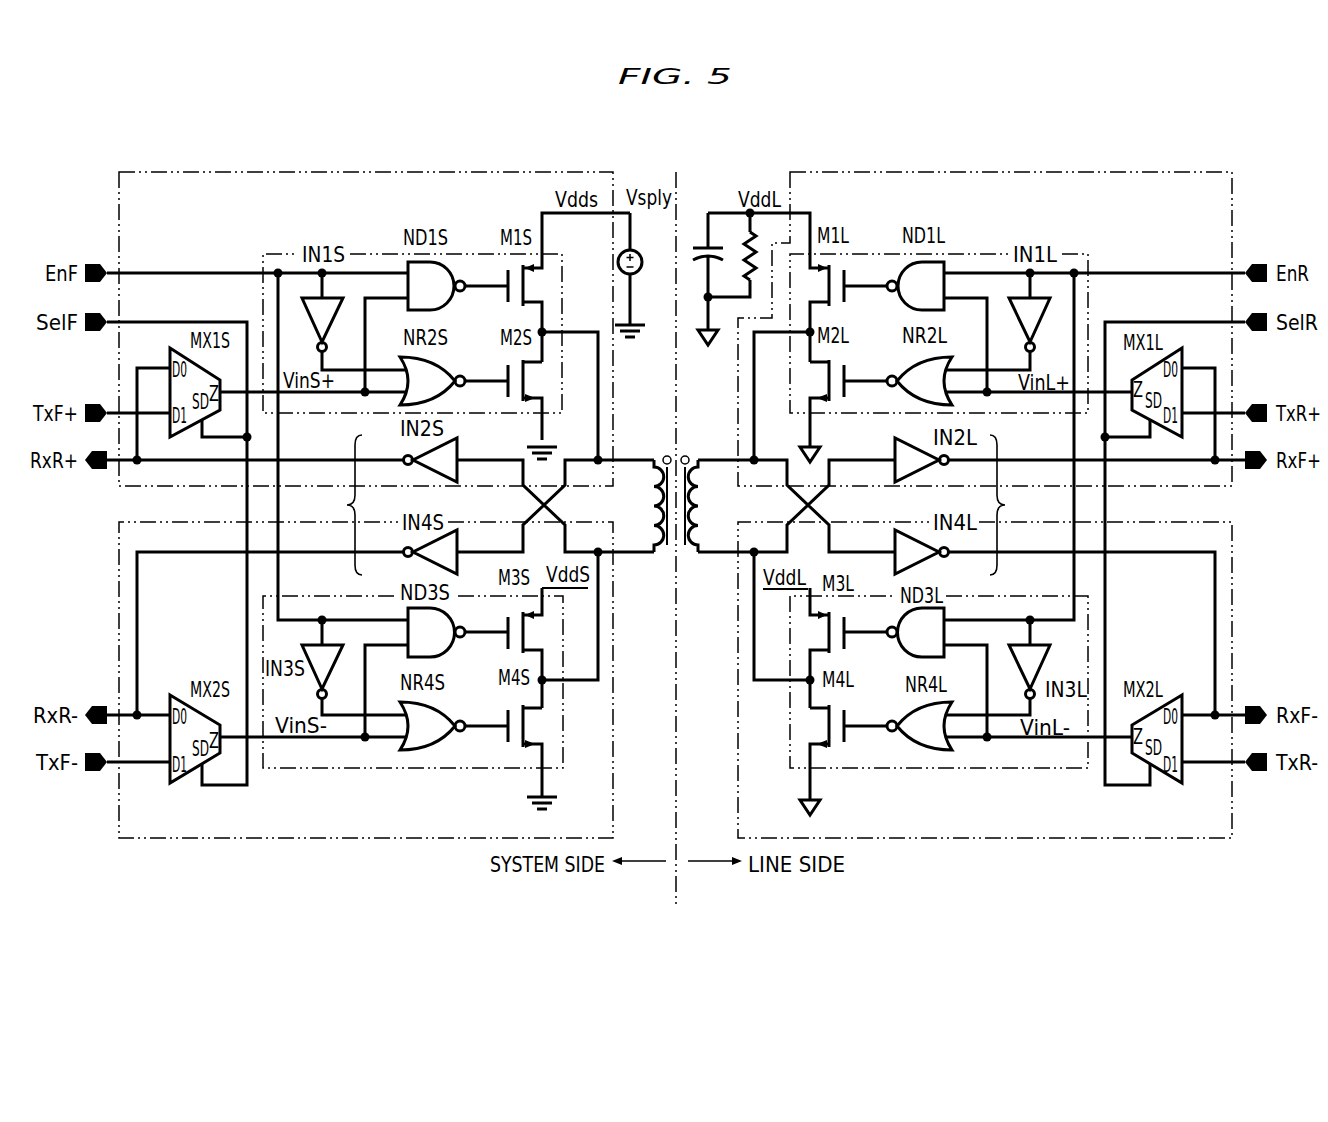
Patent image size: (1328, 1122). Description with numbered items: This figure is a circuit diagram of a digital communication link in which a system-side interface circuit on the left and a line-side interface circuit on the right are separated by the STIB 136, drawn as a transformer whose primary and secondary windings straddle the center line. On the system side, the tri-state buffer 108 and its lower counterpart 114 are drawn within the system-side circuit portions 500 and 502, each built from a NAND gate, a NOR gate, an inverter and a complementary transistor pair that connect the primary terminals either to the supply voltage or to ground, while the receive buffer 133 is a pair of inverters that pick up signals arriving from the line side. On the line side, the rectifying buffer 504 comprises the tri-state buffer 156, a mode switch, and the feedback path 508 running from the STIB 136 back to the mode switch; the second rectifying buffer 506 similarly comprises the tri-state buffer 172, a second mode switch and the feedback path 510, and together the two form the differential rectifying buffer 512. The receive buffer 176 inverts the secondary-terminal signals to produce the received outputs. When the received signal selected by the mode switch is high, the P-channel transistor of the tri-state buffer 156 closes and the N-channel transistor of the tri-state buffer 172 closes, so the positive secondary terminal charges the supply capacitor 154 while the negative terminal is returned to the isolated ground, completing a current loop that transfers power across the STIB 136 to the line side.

The system side transmit/receive circuit 500 is at (300, 172).
The system side lower transmit/receive circuit 502 is at (288, 840).
The rectifying buffer 504 is at (1068, 172).
The second rectifying buffer 506 is at (1075, 840).
The tri-state buffer 108 is at (263, 256).
The system side lower driver control logic 114 is at (362, 768).
The receive buffer 133 is at (381, 505).
The STIB 136 is at (694, 665).
The supply capacitor 154 is at (703, 255).
The tri-state buffer 156 is at (1088, 256).
The tri-state buffer 172 is at (988, 768).
The receive buffer 176 is at (971, 505).
The feedback path 508 is at (1020, 458).
The feedback path 510 is at (1150, 553).
The differential rectifying buffer 512 is at (994, 893).